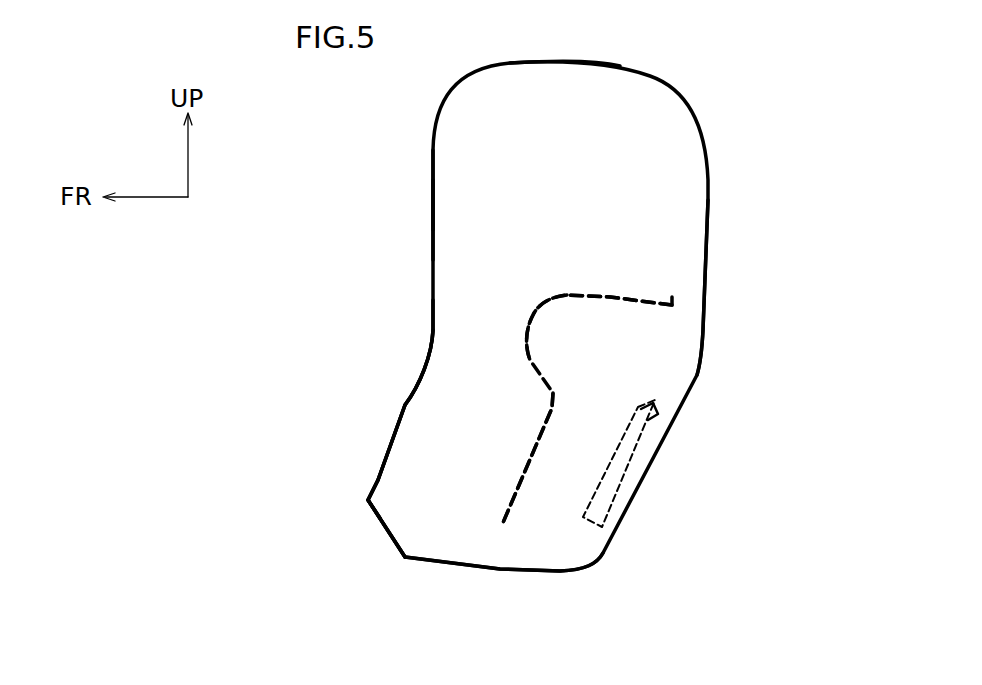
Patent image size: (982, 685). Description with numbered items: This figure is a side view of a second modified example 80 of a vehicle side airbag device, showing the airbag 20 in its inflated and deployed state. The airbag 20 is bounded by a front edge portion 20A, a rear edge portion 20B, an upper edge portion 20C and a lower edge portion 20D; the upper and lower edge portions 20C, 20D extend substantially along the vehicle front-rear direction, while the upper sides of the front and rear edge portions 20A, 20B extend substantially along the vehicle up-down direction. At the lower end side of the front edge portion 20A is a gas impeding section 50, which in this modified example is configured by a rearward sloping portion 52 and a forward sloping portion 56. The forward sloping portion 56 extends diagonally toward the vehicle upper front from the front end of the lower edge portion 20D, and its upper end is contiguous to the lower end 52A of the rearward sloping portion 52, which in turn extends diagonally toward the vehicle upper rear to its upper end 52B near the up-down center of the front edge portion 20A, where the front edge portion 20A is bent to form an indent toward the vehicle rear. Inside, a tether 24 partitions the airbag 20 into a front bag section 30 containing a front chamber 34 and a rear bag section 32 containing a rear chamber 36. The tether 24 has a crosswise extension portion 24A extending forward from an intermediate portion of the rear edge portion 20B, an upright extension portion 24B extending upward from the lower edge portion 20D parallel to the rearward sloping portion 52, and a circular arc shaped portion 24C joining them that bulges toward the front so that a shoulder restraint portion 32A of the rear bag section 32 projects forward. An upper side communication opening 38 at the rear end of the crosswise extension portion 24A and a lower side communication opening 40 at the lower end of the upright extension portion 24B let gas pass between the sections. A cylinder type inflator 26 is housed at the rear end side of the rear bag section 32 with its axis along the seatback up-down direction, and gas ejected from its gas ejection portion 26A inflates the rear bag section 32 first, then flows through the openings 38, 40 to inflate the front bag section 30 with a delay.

The airbag 20 is at (690, 93).
The front edge portion 20A is at (435, 215).
The rear edge portion 20B is at (703, 330).
The upper edge portion 20C is at (557, 62).
The lower edge portion 20D is at (497, 571).
The tether 24 is at (536, 364).
The crosswise extension portion 24A is at (608, 295).
The upright extension portion 24B is at (535, 448).
The circular arc shaped portion 24C is at (528, 311).
The inflator 26 is at (613, 508).
The gas ejection portion 26A is at (659, 405).
The front bag section 30 is at (453, 158).
The rear bag section 32 is at (600, 432).
The shoulder restraint portion 32A is at (548, 333).
The front chamber 34 is at (455, 250).
The rear chamber 36 is at (585, 462).
The upper side communication opening 38 is at (674, 301).
The lower side communication opening 40 is at (500, 540).
The gas impeding section 50 is at (397, 432).
The rearward sloping portion 52 is at (410, 382).
The lower end 52A is at (368, 500).
The upper end 52B is at (435, 328).
The forward sloping portion 56 is at (382, 527).
The second modified example 80 is at (760, 115).